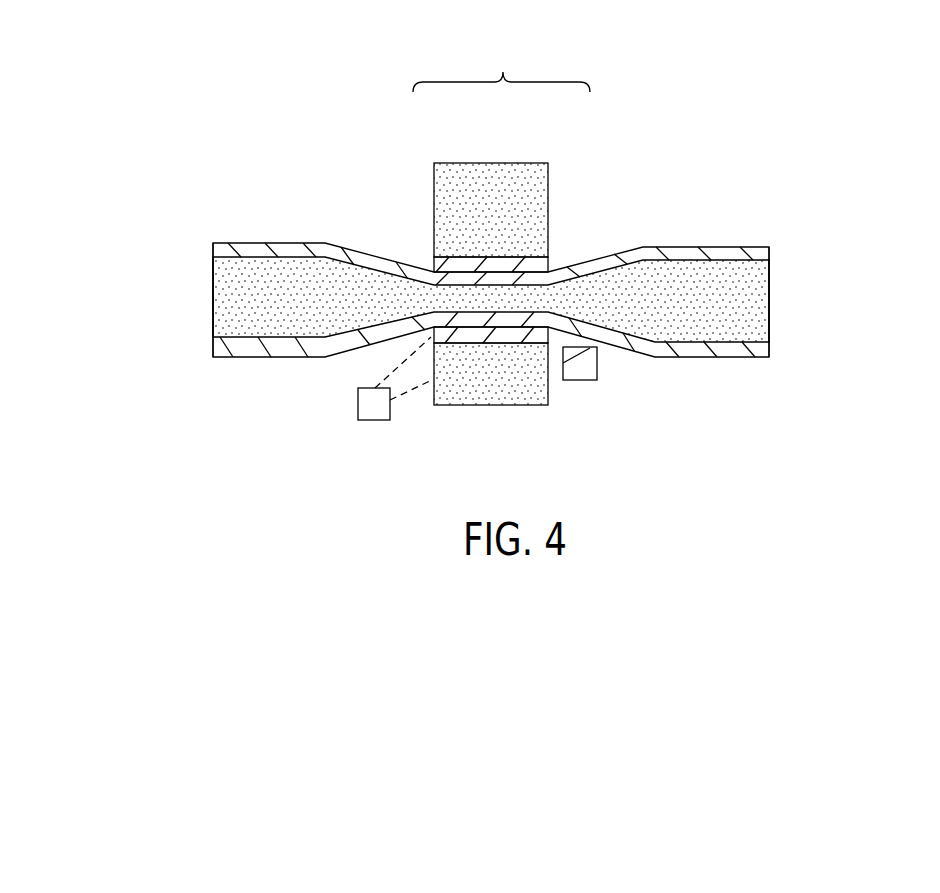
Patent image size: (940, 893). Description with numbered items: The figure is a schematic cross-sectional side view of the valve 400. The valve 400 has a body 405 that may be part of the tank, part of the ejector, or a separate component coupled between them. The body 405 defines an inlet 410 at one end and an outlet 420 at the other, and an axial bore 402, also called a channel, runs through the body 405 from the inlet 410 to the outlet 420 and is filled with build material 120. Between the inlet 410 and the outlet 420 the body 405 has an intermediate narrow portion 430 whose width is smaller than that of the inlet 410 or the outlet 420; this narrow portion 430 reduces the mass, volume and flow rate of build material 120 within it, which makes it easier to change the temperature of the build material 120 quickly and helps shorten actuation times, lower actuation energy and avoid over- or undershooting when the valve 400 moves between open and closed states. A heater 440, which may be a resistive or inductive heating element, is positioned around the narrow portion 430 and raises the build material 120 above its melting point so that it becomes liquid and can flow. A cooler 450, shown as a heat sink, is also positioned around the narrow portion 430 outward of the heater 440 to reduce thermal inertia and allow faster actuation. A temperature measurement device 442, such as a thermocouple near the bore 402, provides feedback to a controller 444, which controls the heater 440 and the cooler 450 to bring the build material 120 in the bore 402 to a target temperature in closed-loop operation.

The valve 400 is at (300, 148).
The axial bore 402 is at (208, 252).
The build material 120 is at (283, 310).
The body 405 is at (301, 243).
The inlet 410 is at (212, 300).
The outlet 420 is at (777, 305).
The narrow portion 430 is at (501, 65).
The heater 440 is at (558, 259).
The temperature measurement device 442 is at (578, 378).
The controller 444 is at (365, 421).
The cooler 450 is at (558, 181).